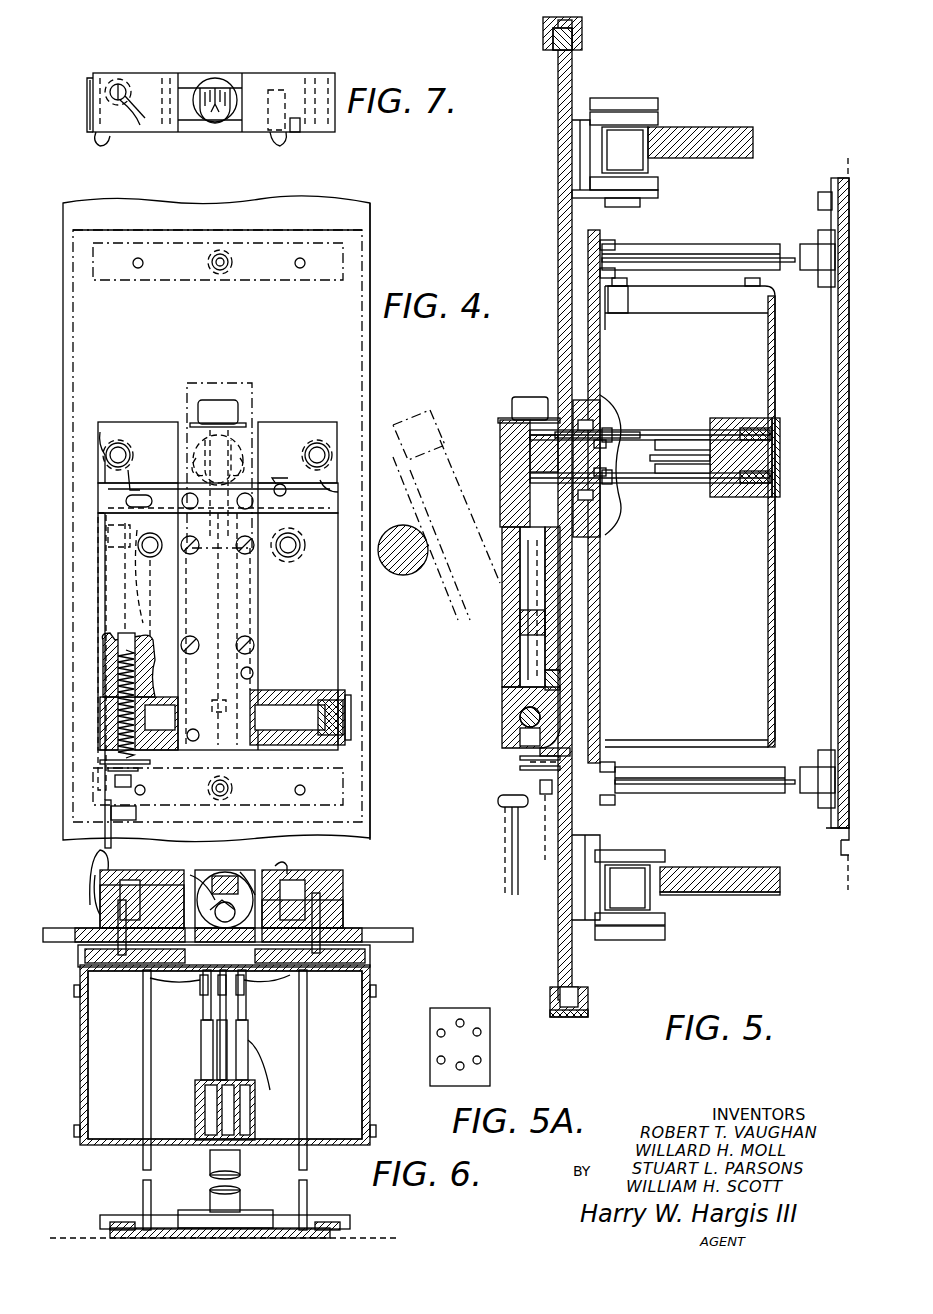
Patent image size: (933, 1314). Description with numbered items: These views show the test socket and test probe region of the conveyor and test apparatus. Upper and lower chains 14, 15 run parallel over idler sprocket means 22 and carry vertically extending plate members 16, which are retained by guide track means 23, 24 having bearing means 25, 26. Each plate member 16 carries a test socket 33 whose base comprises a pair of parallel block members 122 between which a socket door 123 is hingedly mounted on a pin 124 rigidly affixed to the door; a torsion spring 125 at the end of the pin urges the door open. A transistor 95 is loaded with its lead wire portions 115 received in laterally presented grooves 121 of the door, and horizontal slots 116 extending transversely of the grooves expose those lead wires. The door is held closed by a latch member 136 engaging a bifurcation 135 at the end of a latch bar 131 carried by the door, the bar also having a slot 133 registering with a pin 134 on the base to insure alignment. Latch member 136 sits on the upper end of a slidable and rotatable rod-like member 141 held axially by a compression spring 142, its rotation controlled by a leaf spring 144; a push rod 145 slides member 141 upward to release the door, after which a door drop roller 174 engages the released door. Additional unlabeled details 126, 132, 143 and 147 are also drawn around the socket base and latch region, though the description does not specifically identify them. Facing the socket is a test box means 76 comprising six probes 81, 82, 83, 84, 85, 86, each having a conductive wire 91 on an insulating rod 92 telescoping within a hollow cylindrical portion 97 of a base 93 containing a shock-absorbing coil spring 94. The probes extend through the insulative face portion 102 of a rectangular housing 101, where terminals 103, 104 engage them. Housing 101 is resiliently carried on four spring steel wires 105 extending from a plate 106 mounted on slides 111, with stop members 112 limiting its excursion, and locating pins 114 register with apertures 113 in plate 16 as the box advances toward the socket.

In FIG. 5, the upper chain 14 is at (655, 98).
In FIG. 5, the lower chain 15 is at (640, 940).
In FIG. 4, the plate member 16 is at (217, 276).
In FIG. 6, the plate member 16 is at (362, 934).
In FIG. 5, the plate member 16 is at (556, 212).
In FIG. 5, the sprocket means 22 is at (725, 895).
In FIG. 5, the guide track means 23 is at (572, 18).
In FIG. 5, the guide track means 24 is at (550, 1017).
In FIG. 5, the bearing means 25 is at (572, 50).
In FIG. 5, the bearing means 26 is at (580, 986).
In FIG. 4, the test socket 33 is at (340, 620).
In FIG. 6, the test socket 33 is at (345, 896).
In FIG. 6, the test box means 76 is at (80, 1062).
In FIG. 5, the test box means 76 is at (780, 622).
In FIG. 6, the probe 81 is at (200, 1064).
In FIG. 5, the probe 81 is at (626, 449).
In FIG. 5A, the probe 81 is at (438, 1030).
In FIG. 6, the probe 82 is at (267, 1076).
In FIG. 5A, the probe 82 is at (481, 1030).
In FIG. 5, the probe 83 is at (677, 456).
In FIG. 5A, the probe 83 is at (437, 1060).
In FIG. 5A, the probe 84 is at (481, 1062).
In FIG. 6, the probe 85 is at (230, 1058).
In FIG. 5, the probe 85 is at (680, 428).
In FIG. 5A, the probe 85 is at (462, 1018).
In FIG. 5, the probe 86 is at (690, 485).
In FIG. 5A, the probe 86 is at (456, 1068).
In FIG. 6, the electrically conductive wire 91 is at (228, 1008).
In FIG. 5, the electrically conductive wire 91 is at (590, 400).
In FIG. 6, the cylindrical rod 92 is at (220, 1070).
In FIG. 5, the cylindrical rod 92 is at (700, 430).
In FIG. 6, the base 93 is at (250, 1122).
In FIG. 5, the base 93 is at (760, 510).
In FIG. 5A, the base 93 is at (440, 1092).
In FIG. 6, the coil spring 94 is at (205, 1122).
In FIG. 5, the coil spring 94 is at (752, 432).
In FIG. 7, the transistor 95 is at (215, 78).
In FIG. 4, the transistor 95 is at (222, 398).
In FIG. 6, the transistor 95 is at (235, 892).
In FIG. 5, the transistor 95 is at (522, 396).
In FIG. 6, the hollow cylindrical portion 97 is at (210, 1104).
In FIG. 5, the hollow cylindrical portion 97 is at (740, 425).
In FIG. 6, the housing 101 is at (125, 1148).
In FIG. 5, the housing 101 is at (777, 585).
In FIG. 6, the insulative face portion 102 is at (200, 975).
In FIG. 5, the insulative face portion 102 is at (605, 440).
In FIG. 5, the terminal 103 is at (600, 400).
In FIG. 6, the terminal 104 is at (250, 978).
In FIG. 4, the spring steel wire 105 is at (310, 262).
In FIG. 6, the spring steel wire 105 is at (143, 1080).
In FIG. 5, the spring steel wire 105 is at (705, 258).
In FIG. 4, the plate 106 is at (366, 270).
In FIG. 6, the plate 106 is at (160, 1228).
In FIG. 5, the plate 106 is at (836, 504).
In FIG. 6, the slide 111 is at (128, 1228).
In FIG. 5, the slide 111 is at (830, 660).
In FIG. 4, the stop member 112 is at (207, 262).
In FIG. 6, the stop member 112 is at (242, 1160).
In FIG. 5, the stop member 112 is at (648, 255).
In FIG. 7, the aperture 113 is at (318, 74).
In FIG. 4, the aperture 113 is at (142, 422).
In FIG. 6, the aperture 113 is at (135, 880).
In FIG. 5, the aperture 113 is at (498, 440).
In FIG. 4, the locating pin 114 is at (122, 448).
In FIG. 6, the locating pin 114 is at (322, 904).
In FIG. 7, the lead wire portion 115 is at (218, 100).
In FIG. 4, the horizontal slot 116 is at (258, 440).
In FIG. 4, the groove 121 is at (232, 618).
In FIG. 6, the groove 121 is at (218, 895).
In FIG. 4, the block member 122 is at (108, 602).
In FIG. 6, the block member 122 is at (270, 900).
In FIG. 5, the block member 122 is at (560, 738).
In FIG. 4, the socket door 123 is at (255, 628).
In FIG. 6, the socket door 123 is at (250, 872).
In FIG. 5, the socket door 123 is at (500, 450).
In FIG. 4, the pin 124 is at (350, 712).
In FIG. 5, the pin 124 is at (520, 720).
In FIG. 4, the torsion spring 125 is at (320, 700).
In FIG. 4, the cover strip 126 is at (88, 488).
In FIG. 6, the cover strip 126 is at (88, 868).
In FIG. 7, the latch bar 131 is at (165, 80).
In FIG. 4, the latch bar 131 is at (165, 560).
In FIG. 5, the latch bar 131 is at (500, 520).
In FIG. 4, the block edges 132 is at (100, 440).
In FIG. 4, the slot 133 is at (292, 508).
In FIG. 7, the pin 134 is at (280, 140).
In FIG. 4, the pin 134 is at (282, 480).
In FIG. 6, the pin 134 is at (290, 868).
In FIG. 7, the bifurcation 135 is at (128, 134).
In FIG. 4, the bifurcation 135 is at (138, 492).
In FIG. 7, the latch member 136 is at (96, 136).
In FIG. 4, the latch member 136 is at (110, 510).
In FIG. 7, the rod-like member 141 is at (122, 78).
In FIG. 4, the rod-like member 141 is at (128, 500).
In FIG. 4, the compression spring 142 is at (114, 718).
In FIG. 5, the compression spring 142 is at (560, 740).
In FIG. 4, the spring seat 143 is at (118, 764).
In FIG. 5, the spring seat 143 is at (570, 752).
In FIG. 7, the leaf spring 144 is at (87, 88).
In FIG. 4, the leaf spring 144 is at (92, 530).
In FIG. 6, the leaf spring 144 is at (98, 892).
In FIG. 4, the push rod 145 is at (115, 838).
In FIG. 5, the push rod 145 is at (505, 850).
In FIG. 5, the link 147 is at (548, 805).
In FIG. 4, the door drop roller 174 is at (400, 575).